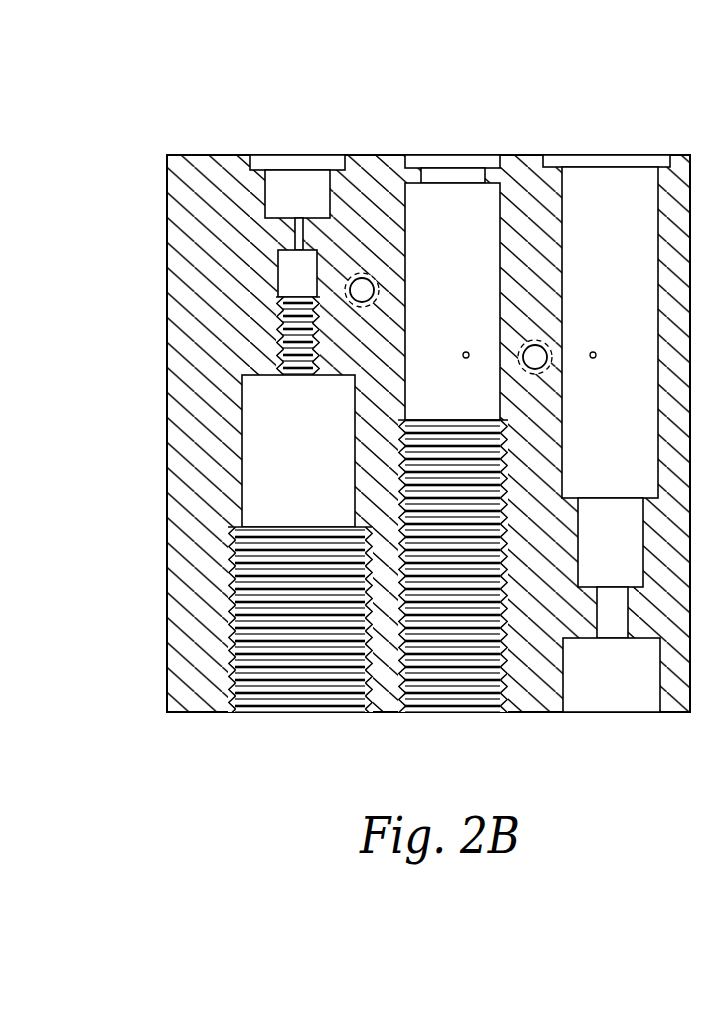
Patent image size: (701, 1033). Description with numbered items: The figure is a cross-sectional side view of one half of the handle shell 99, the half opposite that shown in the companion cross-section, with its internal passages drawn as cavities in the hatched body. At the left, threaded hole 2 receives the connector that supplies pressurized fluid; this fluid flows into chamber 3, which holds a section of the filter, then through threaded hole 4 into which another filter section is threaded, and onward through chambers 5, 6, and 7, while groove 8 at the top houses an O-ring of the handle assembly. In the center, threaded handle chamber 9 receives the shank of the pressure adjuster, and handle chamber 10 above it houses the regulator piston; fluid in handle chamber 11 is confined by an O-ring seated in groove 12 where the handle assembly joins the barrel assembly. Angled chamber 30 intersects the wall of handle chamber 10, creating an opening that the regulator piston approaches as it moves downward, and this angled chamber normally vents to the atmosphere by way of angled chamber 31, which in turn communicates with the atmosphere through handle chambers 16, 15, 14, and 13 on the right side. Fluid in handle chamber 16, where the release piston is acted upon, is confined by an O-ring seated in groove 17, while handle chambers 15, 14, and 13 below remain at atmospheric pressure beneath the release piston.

The handle shell 99 is at (167, 130).
The groove 8 is at (265, 158).
The chamber 7 is at (283, 207).
The chamber 6 is at (304, 232).
The chamber 5 is at (291, 284).
The threaded hole 4 is at (302, 374).
The chamber 3 is at (293, 469).
The threaded hole 2 is at (287, 712).
The groove 12 is at (443, 160).
The handle chamber 11 is at (463, 178).
The handle chamber 10 is at (438, 334).
The threaded handle chamber 9 is at (445, 712).
The angled chamber 30 is at (464, 358).
The groove 17 is at (575, 158).
The handle chamber 16 is at (599, 334).
The angled chamber 31 is at (596, 358).
The handle chamber 15 is at (598, 554).
The handle chamber 14 is at (599, 628).
The handle chamber 13 is at (599, 692).